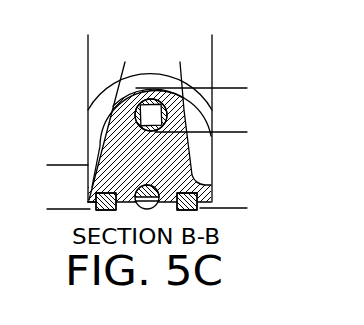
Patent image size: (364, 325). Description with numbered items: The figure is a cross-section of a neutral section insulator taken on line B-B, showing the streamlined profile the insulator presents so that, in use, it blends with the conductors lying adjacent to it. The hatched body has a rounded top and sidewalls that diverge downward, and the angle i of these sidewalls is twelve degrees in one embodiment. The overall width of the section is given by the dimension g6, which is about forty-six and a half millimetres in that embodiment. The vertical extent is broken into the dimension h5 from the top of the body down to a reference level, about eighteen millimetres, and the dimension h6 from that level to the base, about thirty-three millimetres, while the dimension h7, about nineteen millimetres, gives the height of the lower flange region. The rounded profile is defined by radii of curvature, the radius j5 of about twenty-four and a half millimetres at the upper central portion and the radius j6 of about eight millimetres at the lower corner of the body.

The dimension g6 is at (212, 43).
The angle of the sidewalls i is at (180, 70).
The dimension h5 is at (239, 88).
The dimension h6 is at (239, 132).
The dimension h7 is at (55, 165).
The radius of curvature j5 is at (162, 125).
The radius of curvature j6 is at (100, 175).